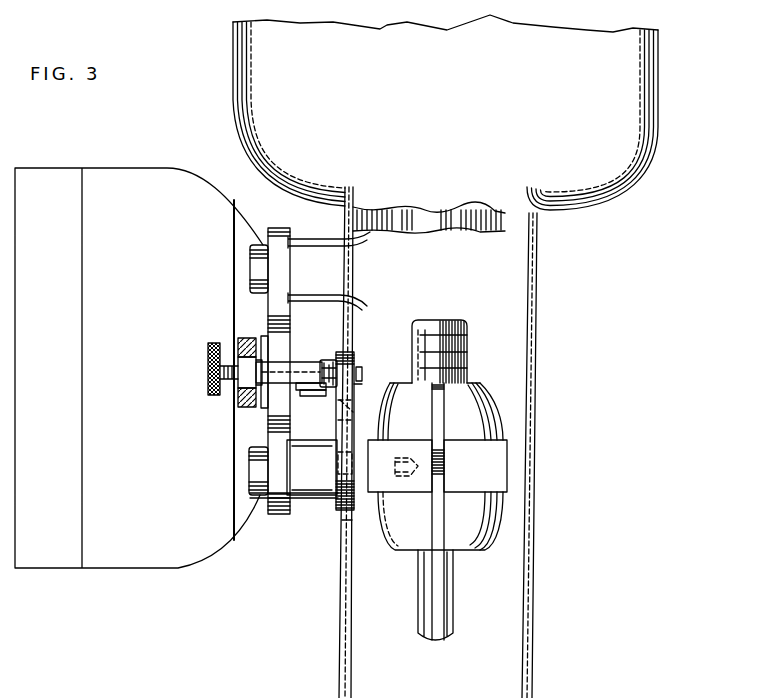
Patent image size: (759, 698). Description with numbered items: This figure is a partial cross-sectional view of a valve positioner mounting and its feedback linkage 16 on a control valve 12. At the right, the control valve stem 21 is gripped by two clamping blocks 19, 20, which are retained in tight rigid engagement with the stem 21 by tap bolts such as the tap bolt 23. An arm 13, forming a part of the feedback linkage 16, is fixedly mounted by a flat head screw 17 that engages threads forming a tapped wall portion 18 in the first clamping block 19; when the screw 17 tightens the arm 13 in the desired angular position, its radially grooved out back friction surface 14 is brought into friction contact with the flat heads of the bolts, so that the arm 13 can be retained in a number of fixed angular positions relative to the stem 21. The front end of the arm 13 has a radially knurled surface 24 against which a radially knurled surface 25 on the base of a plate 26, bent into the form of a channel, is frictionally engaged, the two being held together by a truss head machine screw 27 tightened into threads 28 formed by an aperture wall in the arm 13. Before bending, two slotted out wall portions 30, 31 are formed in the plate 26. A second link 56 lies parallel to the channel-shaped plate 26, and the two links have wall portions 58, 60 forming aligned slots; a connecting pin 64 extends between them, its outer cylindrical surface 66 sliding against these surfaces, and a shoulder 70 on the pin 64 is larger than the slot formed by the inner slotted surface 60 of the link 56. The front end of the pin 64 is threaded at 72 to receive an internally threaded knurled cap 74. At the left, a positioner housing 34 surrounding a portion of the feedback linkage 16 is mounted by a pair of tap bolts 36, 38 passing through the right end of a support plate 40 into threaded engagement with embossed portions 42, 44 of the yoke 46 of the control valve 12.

The control valve 12 is at (668, 60).
The arm 13 is at (345, 406).
The radially grooved out back friction surface 14 is at (357, 466).
The feedback linkage 16 is at (213, 325).
The flat head screw 17 is at (340, 467).
The tapped wall portion 18 is at (387, 485).
The clamping block 19 is at (401, 548).
The clamping block 20 is at (475, 412).
The control valve stem 21 is at (464, 348).
The tap bolt 23 is at (363, 497).
The radially knurled surface 24 is at (354, 356).
The radially knurled surface 25 is at (350, 387).
The plate 26 is at (333, 362).
The truss head machine screw 27 is at (323, 364).
The threads 28 is at (362, 373).
The slotted out wall portion 30 is at (328, 362).
The slotted out wall portion 31 is at (346, 410).
The positioner housing 34 is at (70, 588).
The tap bolt 36 is at (260, 268).
The tap bolt 38 is at (258, 466).
The support plate 40 is at (280, 236).
The embossed portion 42 is at (322, 248).
The embossed portion 44 is at (318, 497).
The yoke 46 is at (505, 598).
The link 56 is at (256, 386).
The wall portion 58 is at (316, 397).
The wall portion 60 is at (243, 388).
The connecting pin 64 is at (282, 381).
The outer cylindrical surface 66 is at (307, 391).
The shoulder 70 is at (263, 342).
The threaded front end 72 is at (212, 377).
The knurled cap 74 is at (207, 351).